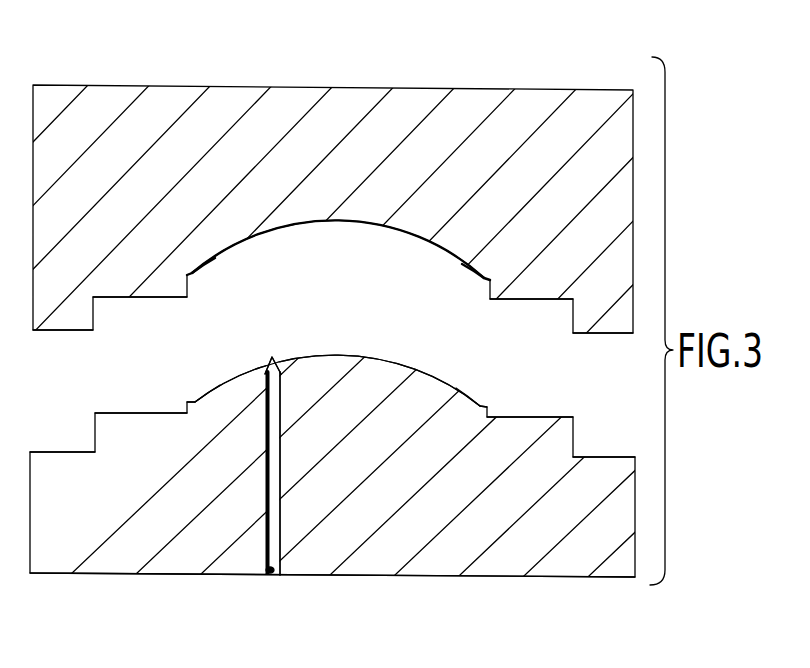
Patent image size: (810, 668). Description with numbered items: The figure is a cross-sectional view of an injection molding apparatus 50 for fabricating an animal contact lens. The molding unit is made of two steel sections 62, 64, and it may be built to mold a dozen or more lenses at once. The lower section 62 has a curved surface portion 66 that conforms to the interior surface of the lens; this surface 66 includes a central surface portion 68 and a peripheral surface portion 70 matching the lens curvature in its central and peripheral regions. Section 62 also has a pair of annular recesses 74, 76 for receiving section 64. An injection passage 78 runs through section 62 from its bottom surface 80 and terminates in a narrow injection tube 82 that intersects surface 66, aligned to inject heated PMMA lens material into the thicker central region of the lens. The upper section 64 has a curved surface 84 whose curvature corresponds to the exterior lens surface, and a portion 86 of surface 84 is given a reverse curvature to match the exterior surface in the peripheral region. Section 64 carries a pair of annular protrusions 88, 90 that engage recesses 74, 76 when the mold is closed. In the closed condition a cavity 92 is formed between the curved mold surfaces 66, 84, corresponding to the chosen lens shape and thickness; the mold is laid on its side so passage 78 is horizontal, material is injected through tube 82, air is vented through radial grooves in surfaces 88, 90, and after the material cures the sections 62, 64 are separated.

The mold assembly 50 is at (357, 30).
The section 62 is at (136, 577).
The section 64 is at (170, 85).
The curved surface portion 66 is at (376, 358).
The central surface portion 68 is at (282, 361).
The peripheral surface portion 70 is at (212, 388).
The annular recess 74 is at (120, 412).
The annular recess 76 is at (93, 426).
The injection passage 78 is at (268, 580).
The bottom surface 80 is at (450, 578).
The injection tube 82 is at (284, 374).
The curved surface 84 is at (358, 222).
The portion 86 is at (208, 265).
The annular protrusion 88 is at (128, 298).
The annular protrusion 90 is at (52, 332).
The cavity 92 is at (347, 336).